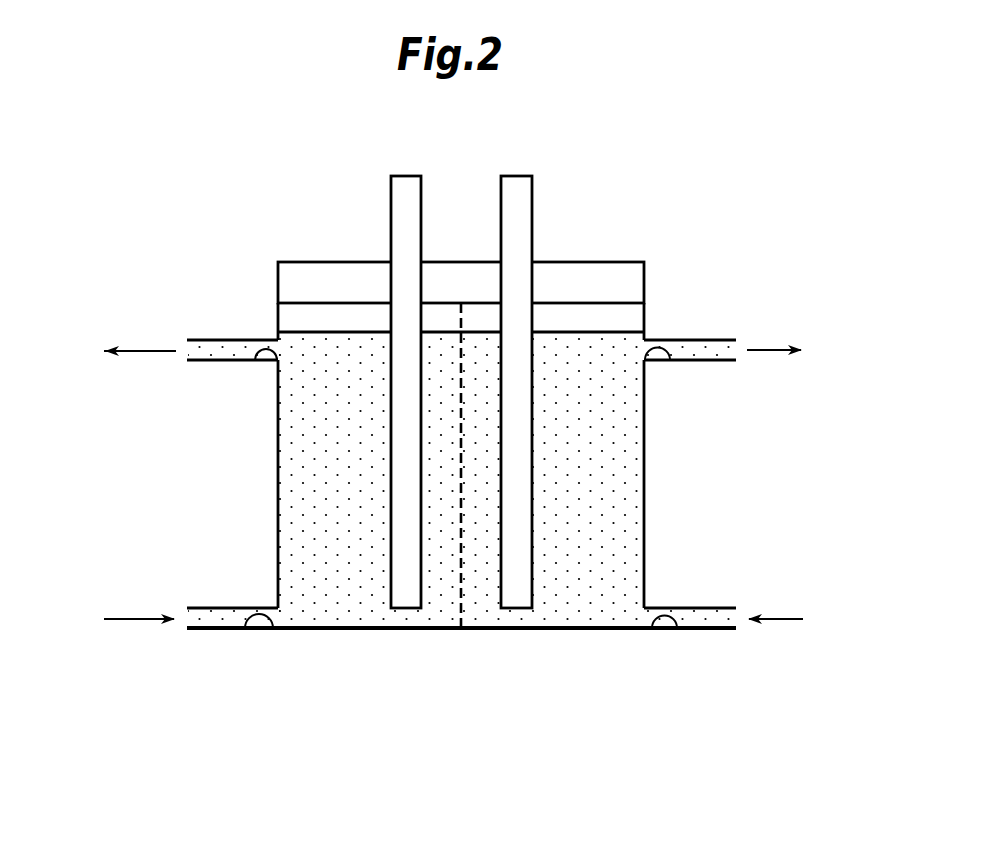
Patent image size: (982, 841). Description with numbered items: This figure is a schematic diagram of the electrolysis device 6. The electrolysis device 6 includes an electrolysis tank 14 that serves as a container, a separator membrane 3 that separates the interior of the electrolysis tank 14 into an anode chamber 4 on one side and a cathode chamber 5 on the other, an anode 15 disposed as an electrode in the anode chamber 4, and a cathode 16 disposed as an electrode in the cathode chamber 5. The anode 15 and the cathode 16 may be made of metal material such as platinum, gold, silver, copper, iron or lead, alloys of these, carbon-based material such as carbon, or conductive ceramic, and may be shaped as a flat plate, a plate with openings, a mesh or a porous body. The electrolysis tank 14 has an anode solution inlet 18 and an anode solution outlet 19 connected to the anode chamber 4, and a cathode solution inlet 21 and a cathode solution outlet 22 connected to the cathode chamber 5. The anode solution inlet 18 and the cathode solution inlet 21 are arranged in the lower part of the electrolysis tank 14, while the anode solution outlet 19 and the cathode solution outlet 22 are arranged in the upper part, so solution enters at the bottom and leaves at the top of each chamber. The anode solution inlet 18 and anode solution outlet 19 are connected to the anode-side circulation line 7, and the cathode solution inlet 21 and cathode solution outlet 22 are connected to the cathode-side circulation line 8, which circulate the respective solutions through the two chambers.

The separator membrane 3 is at (461, 573).
The anode chamber 4 is at (322, 491).
The cathode chamber 5 is at (572, 491).
The electrolysis device 6 is at (633, 180).
The anode-side circulation line 7 is at (227, 340).
The cathode-side circulation line 8 is at (688, 338).
The electrolysis tank 14 is at (645, 508).
The anode 15 is at (392, 575).
The cathode 16 is at (531, 553).
The anode solution inlet 18 is at (245, 628).
The anode solution outlet 19 is at (255, 360).
The cathode solution inlet 21 is at (676, 628).
The cathode solution outlet 22 is at (670, 360).